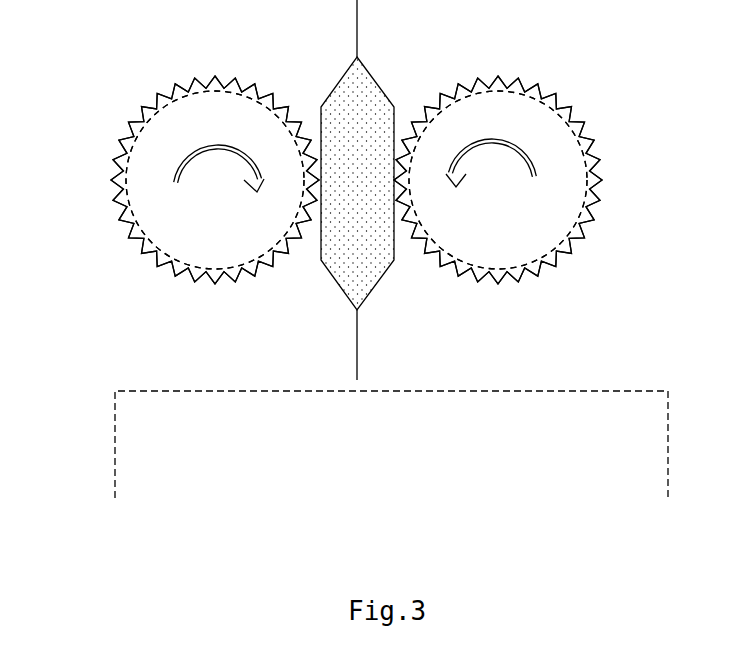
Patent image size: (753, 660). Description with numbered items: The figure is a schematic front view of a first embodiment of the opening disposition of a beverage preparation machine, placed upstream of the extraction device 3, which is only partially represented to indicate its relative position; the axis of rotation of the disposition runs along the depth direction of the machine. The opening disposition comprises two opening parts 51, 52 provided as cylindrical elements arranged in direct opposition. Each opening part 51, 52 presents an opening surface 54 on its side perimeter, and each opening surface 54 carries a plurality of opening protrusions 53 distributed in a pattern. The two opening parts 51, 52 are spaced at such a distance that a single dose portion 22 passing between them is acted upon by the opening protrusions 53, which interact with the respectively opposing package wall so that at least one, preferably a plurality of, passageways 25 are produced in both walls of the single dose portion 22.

The extraction device 3 is at (391, 433).
The single dose portion 22 is at (357, 190).
The passageway 25 is at (330, 182).
The opening part 51 is at (215, 180).
The opening part 52 is at (498, 180).
The opening protrusions 53 is at (122, 121).
The opening surface 54 is at (118, 152).